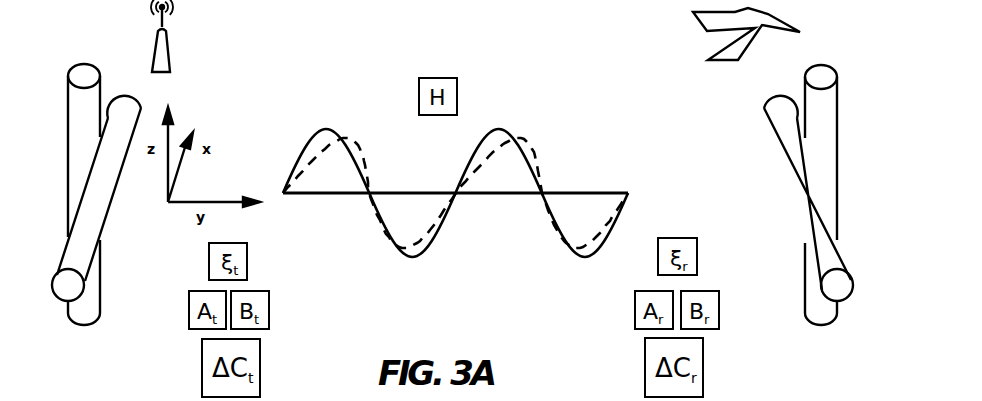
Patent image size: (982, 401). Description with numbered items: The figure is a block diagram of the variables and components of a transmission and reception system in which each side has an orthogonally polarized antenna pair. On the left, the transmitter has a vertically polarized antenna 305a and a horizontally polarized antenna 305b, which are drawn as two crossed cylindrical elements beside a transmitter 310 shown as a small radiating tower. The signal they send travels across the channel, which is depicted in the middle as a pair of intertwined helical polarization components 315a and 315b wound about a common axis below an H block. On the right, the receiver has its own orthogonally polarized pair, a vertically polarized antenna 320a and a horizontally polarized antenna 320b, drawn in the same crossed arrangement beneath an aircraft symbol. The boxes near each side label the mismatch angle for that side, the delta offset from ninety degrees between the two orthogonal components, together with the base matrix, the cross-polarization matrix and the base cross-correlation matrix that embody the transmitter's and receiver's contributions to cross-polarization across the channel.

The vertically polarized antenna 305a is at (92, 62).
The horizontally polarized antenna 305b is at (108, 213).
The transmitter 310 is at (170, 54).
The first helical polarization component 315a is at (303, 137).
The second helical polarization component 315b is at (373, 241).
The vertical receive antenna element 320a is at (806, 92).
The horizontal receive antenna element 320b is at (805, 292).